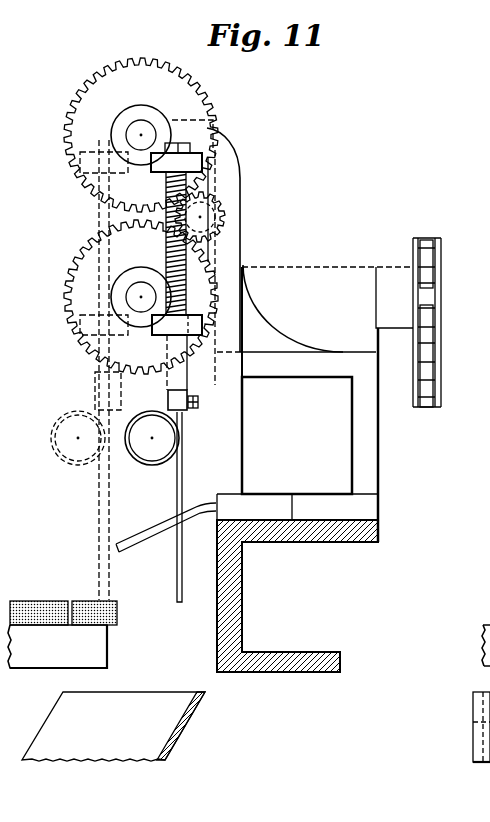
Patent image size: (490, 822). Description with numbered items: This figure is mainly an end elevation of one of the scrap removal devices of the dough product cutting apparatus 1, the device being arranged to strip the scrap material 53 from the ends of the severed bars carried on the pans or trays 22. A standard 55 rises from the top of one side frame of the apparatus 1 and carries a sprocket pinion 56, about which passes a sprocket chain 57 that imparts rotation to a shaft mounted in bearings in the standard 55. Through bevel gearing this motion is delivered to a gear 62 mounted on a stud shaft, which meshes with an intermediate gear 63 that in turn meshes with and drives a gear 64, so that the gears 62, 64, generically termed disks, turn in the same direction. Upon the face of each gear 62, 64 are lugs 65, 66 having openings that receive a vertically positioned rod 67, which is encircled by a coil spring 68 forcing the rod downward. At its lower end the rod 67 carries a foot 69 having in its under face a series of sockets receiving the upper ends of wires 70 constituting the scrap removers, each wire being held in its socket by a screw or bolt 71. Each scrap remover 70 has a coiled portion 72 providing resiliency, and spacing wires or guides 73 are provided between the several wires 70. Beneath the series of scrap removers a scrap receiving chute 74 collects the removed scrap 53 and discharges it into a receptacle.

The apparatus 1 is at (216, 631).
The pans, trays or supports 22 is at (97, 649).
The scrap material 53 is at (117, 612).
The standard 55 is at (365, 438).
The sprocket pinion 56 is at (427, 268).
The sprocket chain 57 is at (442, 370).
The gear 62 is at (100, 73).
The intermediate gear 63 is at (225, 211).
The gear 64 is at (79, 248).
The lug 65 is at (196, 158).
The lug 66 is at (203, 328).
The rod 67 is at (242, 240).
The coil spring 68 is at (293, 299).
The foot 69 is at (188, 392).
The wire 70 is at (182, 469).
The screw or bolt 71 is at (198, 405).
The coiled portion 72 is at (152, 466).
The spacing wire or guide 73 is at (158, 537).
The scrap receiving chute 74 is at (172, 719).